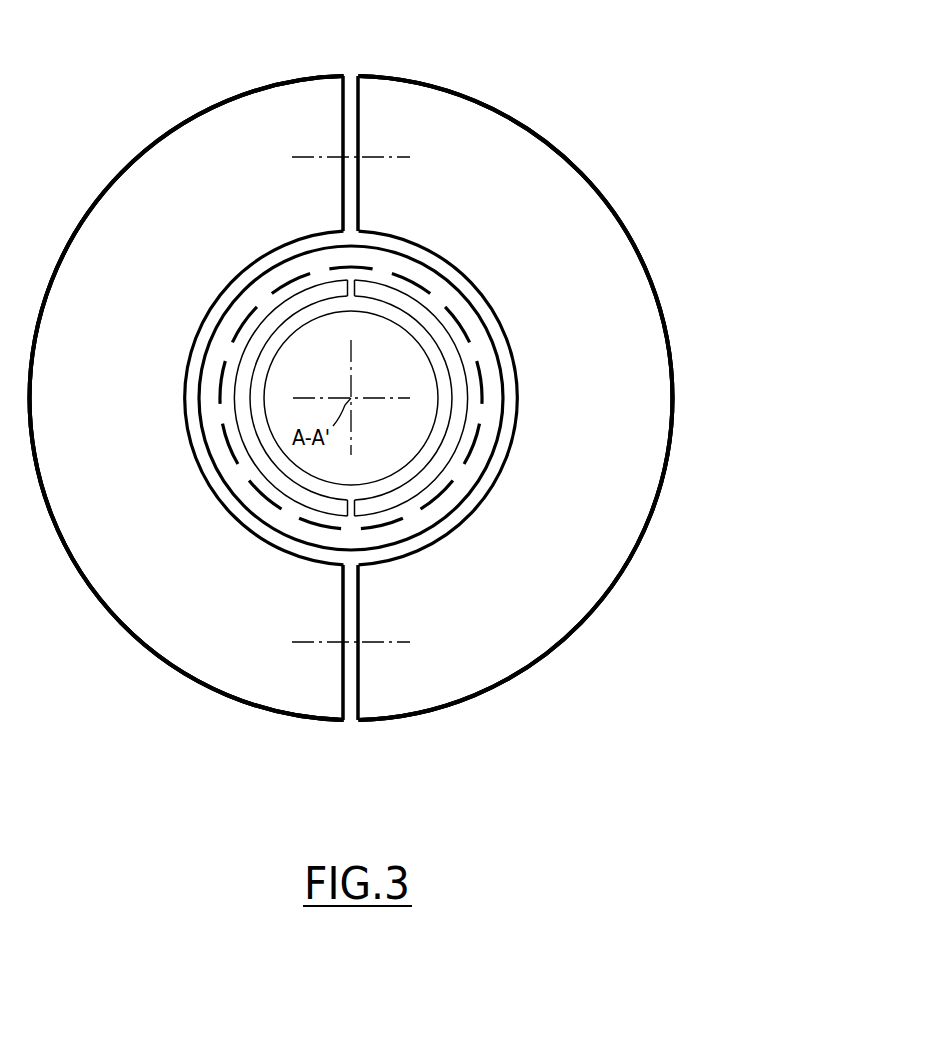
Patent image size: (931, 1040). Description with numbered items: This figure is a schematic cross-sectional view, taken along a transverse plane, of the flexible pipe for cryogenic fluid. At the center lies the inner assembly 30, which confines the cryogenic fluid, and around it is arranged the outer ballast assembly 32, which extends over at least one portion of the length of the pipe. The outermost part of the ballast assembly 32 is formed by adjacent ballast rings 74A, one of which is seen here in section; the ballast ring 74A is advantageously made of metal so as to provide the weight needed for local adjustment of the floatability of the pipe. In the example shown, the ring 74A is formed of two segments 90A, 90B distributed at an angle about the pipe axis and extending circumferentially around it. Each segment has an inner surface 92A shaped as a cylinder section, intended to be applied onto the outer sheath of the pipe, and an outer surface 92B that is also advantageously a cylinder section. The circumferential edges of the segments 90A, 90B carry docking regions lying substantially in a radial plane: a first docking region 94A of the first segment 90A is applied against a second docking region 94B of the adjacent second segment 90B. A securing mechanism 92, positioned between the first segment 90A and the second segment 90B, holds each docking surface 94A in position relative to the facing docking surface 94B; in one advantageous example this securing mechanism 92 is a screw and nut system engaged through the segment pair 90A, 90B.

The inner assembly 30 is at (445, 359).
The outer ballast assembly 32 is at (688, 313).
The ballast ring 74A is at (710, 411).
The first segment 90A is at (602, 560).
The second segment 90B is at (165, 620).
The securing mechanism 92 is at (394, 144).
The inner surface 92A is at (492, 455).
The outer surface 92B is at (648, 270).
The first docking region 94A is at (358, 118).
The second docking region 94B is at (345, 187).